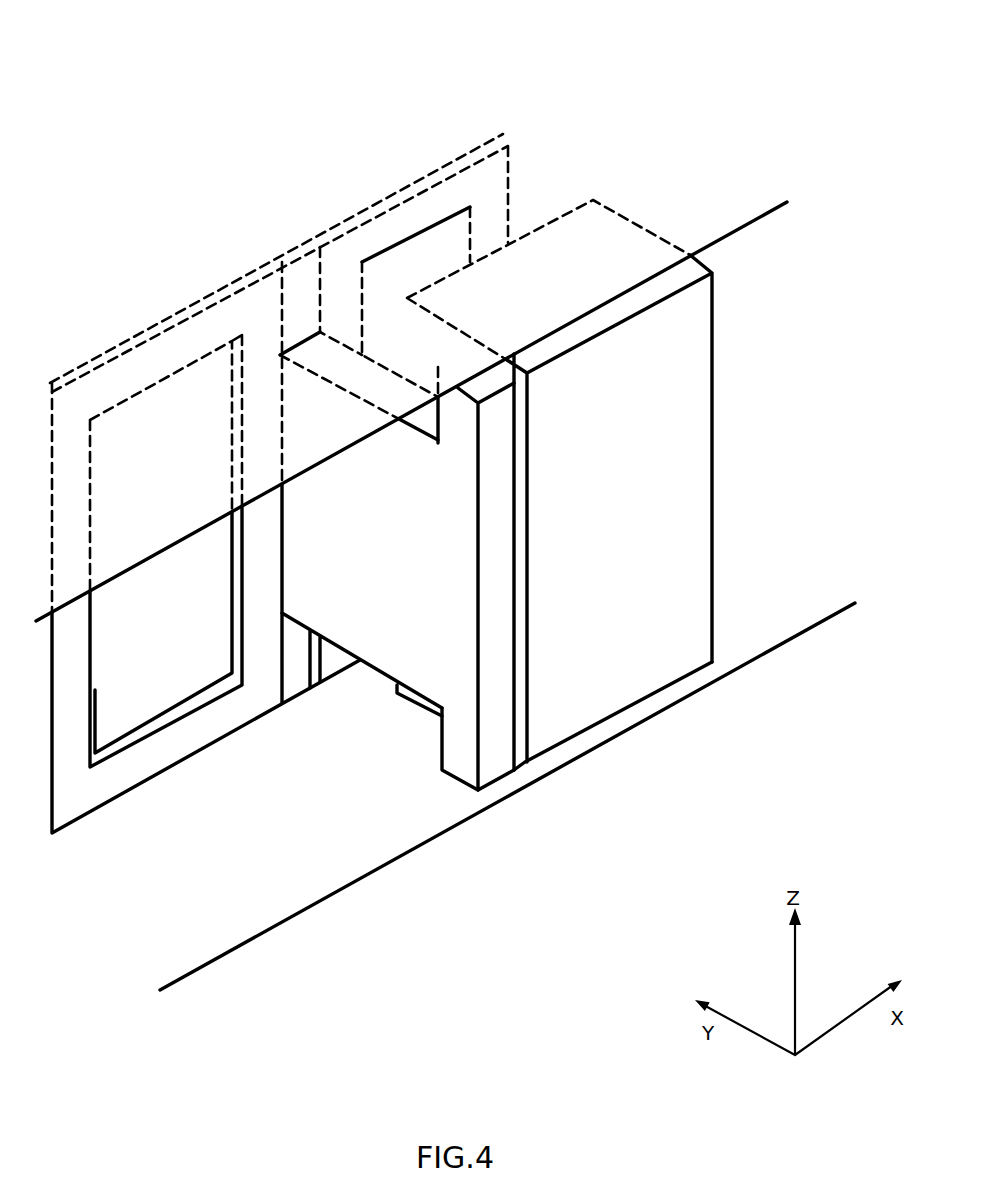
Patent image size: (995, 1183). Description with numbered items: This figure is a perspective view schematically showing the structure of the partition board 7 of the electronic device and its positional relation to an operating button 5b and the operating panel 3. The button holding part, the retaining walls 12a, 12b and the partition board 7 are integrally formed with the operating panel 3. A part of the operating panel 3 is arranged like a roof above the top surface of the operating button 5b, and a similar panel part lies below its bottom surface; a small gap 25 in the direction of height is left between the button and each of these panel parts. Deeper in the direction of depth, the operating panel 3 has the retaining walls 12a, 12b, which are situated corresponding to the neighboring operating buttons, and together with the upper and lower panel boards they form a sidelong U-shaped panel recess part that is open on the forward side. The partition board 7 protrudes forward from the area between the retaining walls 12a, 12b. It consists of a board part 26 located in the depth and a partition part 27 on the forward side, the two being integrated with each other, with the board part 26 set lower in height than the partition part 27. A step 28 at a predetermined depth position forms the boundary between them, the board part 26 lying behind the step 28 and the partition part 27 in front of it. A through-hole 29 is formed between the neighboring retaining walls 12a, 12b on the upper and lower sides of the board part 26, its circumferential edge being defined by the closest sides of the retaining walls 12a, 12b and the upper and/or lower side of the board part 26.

The operating panel 3 is at (742, 198).
The operating button 5b is at (693, 595).
The partition board 7 is at (610, 835).
The retaining wall 12a is at (73, 797).
The retaining wall 12b is at (497, 193).
The small gap 25 is at (703, 258).
The board part 26 is at (363, 632).
The partition part 27 is at (462, 750).
The step 28 is at (438, 443).
The through-hole 29 is at (298, 312).